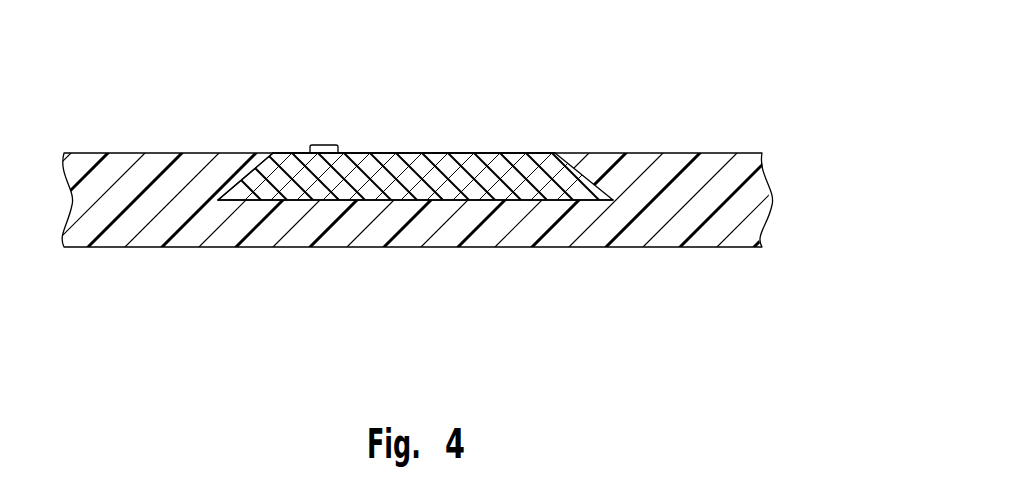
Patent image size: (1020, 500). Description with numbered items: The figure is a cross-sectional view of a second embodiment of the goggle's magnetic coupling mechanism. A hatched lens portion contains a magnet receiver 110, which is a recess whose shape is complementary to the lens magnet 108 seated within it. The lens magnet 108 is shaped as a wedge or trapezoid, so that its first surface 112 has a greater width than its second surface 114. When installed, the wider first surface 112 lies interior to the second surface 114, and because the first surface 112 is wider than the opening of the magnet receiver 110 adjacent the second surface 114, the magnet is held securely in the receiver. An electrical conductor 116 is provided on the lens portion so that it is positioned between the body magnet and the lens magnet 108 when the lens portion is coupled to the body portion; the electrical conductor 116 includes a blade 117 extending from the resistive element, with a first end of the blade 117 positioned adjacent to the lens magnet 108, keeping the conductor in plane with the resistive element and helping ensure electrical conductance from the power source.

The lens magnet 108 is at (427, 160).
The magnet receiver 110 is at (240, 166).
The first surface 112 is at (304, 208).
The second surface 114 is at (538, 144).
The electrical conductor 116 is at (320, 134).
The blade 117 is at (336, 146).